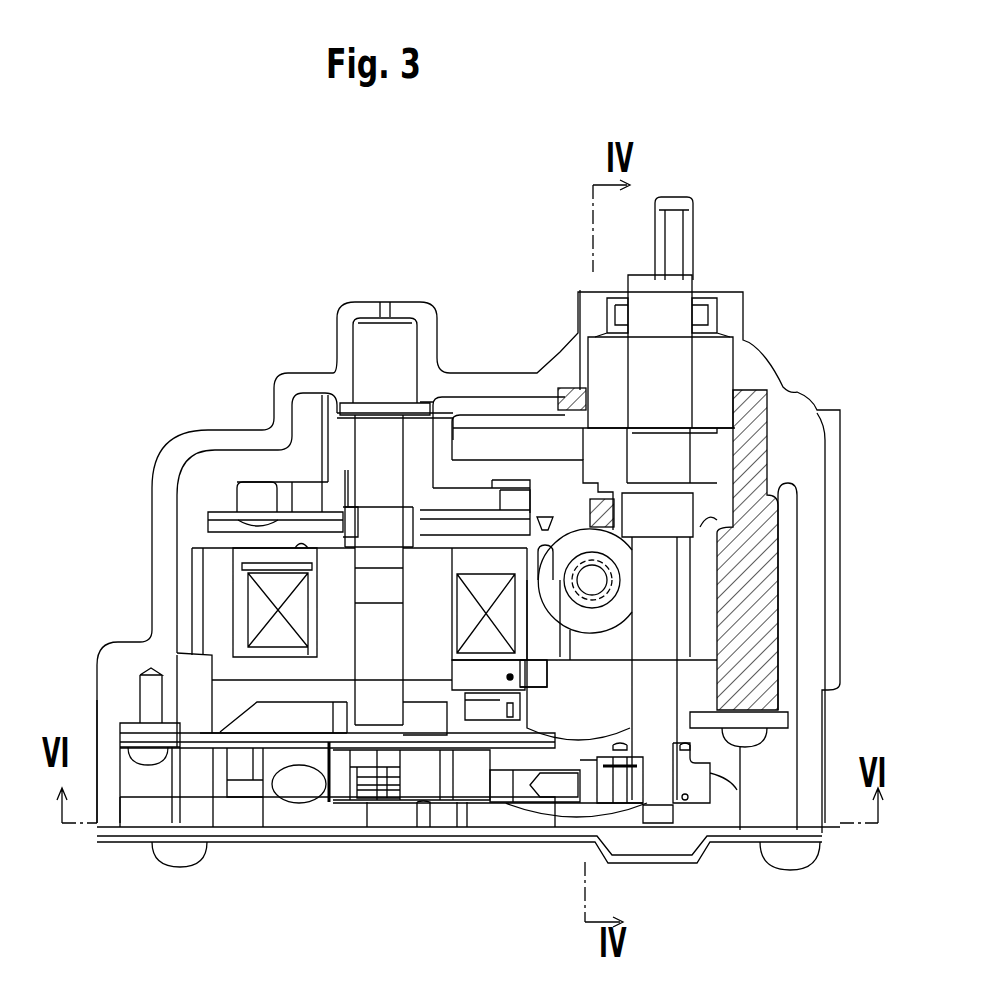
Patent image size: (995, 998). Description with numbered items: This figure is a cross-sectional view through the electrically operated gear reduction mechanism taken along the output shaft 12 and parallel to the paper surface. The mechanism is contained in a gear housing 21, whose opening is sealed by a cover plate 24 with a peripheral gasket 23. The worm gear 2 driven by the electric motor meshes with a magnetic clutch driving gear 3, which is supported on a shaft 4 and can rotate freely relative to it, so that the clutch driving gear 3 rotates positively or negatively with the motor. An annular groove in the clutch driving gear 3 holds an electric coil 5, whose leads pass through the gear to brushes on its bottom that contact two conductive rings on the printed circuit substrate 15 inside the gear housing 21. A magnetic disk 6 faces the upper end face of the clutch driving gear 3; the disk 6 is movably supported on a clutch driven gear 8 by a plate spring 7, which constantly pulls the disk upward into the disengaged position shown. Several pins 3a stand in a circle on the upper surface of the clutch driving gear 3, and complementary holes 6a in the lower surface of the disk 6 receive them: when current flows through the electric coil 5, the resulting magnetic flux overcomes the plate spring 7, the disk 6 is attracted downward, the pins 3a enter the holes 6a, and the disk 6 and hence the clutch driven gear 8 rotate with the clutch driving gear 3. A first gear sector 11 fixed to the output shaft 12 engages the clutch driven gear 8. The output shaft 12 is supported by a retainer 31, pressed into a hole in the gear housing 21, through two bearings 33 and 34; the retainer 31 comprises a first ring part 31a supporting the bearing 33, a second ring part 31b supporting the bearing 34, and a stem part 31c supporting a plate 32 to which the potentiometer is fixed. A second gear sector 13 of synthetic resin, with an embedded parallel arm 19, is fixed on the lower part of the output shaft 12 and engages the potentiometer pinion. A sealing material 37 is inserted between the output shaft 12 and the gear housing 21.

The worm gear 2 is at (612, 603).
The magnetic clutch driving gear 3 is at (193, 615).
The pins 3a is at (545, 600).
The shaft 4 is at (385, 433).
The electric coil 5 is at (257, 603).
The magnetic disk 6 is at (220, 510).
The holes 6a is at (253, 490).
The plate spring 7 is at (290, 470).
The clutch driven gear 8 is at (283, 455).
The first gear sector 11 is at (547, 520).
The output shaft 12 is at (693, 228).
The second gear sector 13 is at (698, 793).
The printed circuit substrate 15 is at (200, 743).
The parallel arm 19 is at (590, 790).
The gear housing 21 is at (163, 502).
The gasket 23 is at (478, 835).
The cover plate 24 is at (400, 838).
The retainer 31 is at (798, 571).
The first ring part 31a is at (572, 388).
The second ring part 31b is at (572, 493).
The stem part 31c is at (758, 607).
The plate 32 is at (780, 720).
The bearing 33 is at (718, 375).
The bearing 34 is at (707, 515).
The sealing material 37 is at (710, 317).